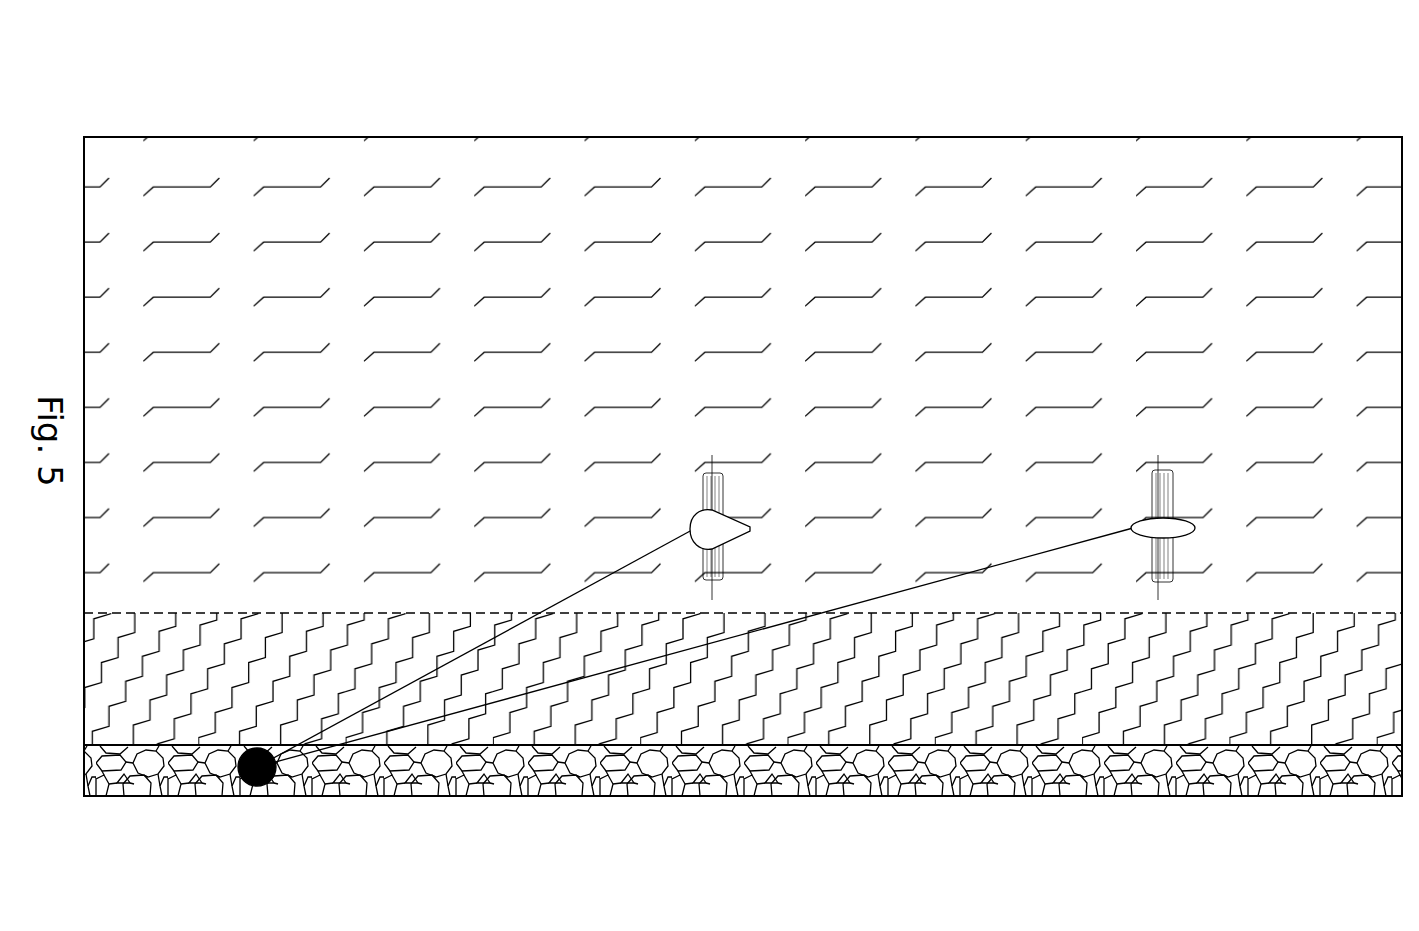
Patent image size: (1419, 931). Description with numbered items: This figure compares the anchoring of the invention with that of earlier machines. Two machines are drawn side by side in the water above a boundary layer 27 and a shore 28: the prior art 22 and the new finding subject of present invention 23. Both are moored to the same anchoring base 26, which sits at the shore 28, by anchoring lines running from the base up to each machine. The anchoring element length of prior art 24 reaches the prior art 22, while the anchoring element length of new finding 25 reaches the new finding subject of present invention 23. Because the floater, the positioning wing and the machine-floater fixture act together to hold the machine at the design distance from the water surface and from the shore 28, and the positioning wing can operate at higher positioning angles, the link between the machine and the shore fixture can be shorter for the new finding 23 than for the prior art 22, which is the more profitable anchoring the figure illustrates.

The prior art 22 is at (1207, 312).
The new finding subject of present invention 23 is at (693, 315).
The anchoring element length of prior art 24 is at (743, 327).
The anchoring element length of new finding 25 is at (743, 325).
The anchoring base 26 is at (685, 702).
The boundary layer 27 is at (743, 733).
The shore 28 is at (733, 811).